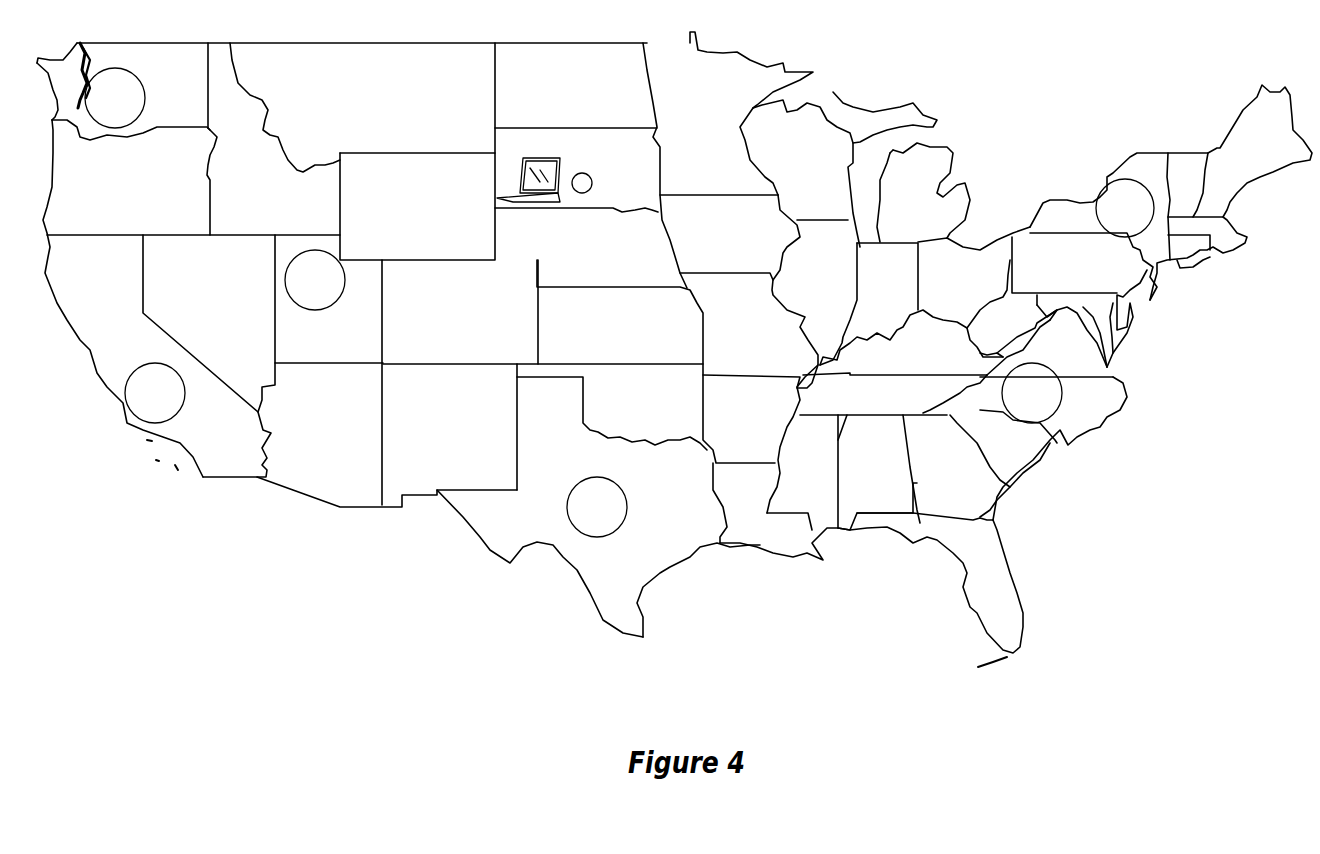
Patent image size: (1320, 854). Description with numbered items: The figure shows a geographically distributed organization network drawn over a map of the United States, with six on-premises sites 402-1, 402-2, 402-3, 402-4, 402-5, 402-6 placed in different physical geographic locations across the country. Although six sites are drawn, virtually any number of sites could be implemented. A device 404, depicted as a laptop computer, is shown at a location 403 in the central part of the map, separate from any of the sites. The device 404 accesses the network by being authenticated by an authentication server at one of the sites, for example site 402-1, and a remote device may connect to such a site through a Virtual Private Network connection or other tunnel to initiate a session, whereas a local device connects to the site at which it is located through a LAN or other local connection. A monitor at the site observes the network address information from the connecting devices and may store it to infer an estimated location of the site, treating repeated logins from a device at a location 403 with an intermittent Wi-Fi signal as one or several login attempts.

The on-premises site 402-1 is at (91, 108).
The on-premises site 402-2 is at (131, 403).
The on-premises site 402-3 is at (291, 290).
The on-premises site 402-4 is at (573, 517).
The on-premises site 402-5 is at (1008, 403).
The on-premises site 402-6 is at (1101, 218).
The location 403 is at (610, 174).
The device 404 is at (563, 168).